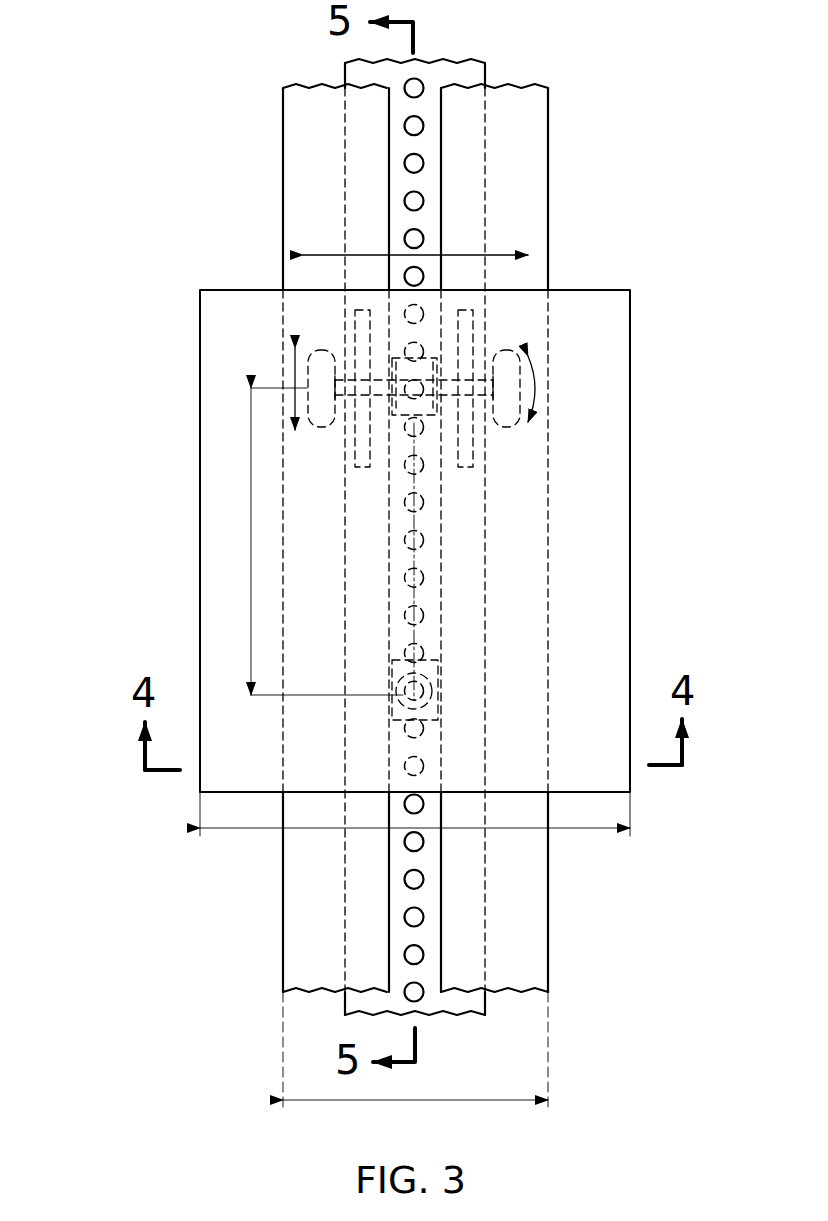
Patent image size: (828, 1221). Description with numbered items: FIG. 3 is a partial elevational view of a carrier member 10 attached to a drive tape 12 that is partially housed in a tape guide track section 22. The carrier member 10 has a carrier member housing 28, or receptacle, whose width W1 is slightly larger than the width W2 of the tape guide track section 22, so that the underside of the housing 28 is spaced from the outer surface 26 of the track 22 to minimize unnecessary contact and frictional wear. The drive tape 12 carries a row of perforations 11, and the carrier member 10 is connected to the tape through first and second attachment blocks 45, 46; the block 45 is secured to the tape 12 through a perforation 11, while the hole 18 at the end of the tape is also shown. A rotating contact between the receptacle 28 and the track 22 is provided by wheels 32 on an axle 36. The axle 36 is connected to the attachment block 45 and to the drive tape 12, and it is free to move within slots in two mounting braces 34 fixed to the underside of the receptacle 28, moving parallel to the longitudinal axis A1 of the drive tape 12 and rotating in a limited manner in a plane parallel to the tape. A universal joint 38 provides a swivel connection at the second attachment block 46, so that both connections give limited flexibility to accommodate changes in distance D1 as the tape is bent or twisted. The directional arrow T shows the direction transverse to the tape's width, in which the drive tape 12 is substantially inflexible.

The carrier member 10 is at (183, 407).
The perforation 11 is at (423, 163).
The drive tape 12 is at (437, 62).
The end hole 18 is at (437, 999).
The tape guide track section 22 is at (548, 945).
The outer surface 26 is at (308, 898).
The carrier member housing 28 is at (630, 360).
The wheels 32 is at (322, 428).
The mounting braces 34 is at (473, 445).
The axle 36 is at (378, 375).
The universal joint 38 is at (437, 672).
The first attachment block 45 is at (430, 353).
The second attachment block 46 is at (442, 703).
The directional arrow T is at (365, 255).
The distance D1 is at (252, 543).
The longitudinal axis A1 is at (415, 565).
The width W1 is at (560, 828).
The width W2 is at (470, 1100).